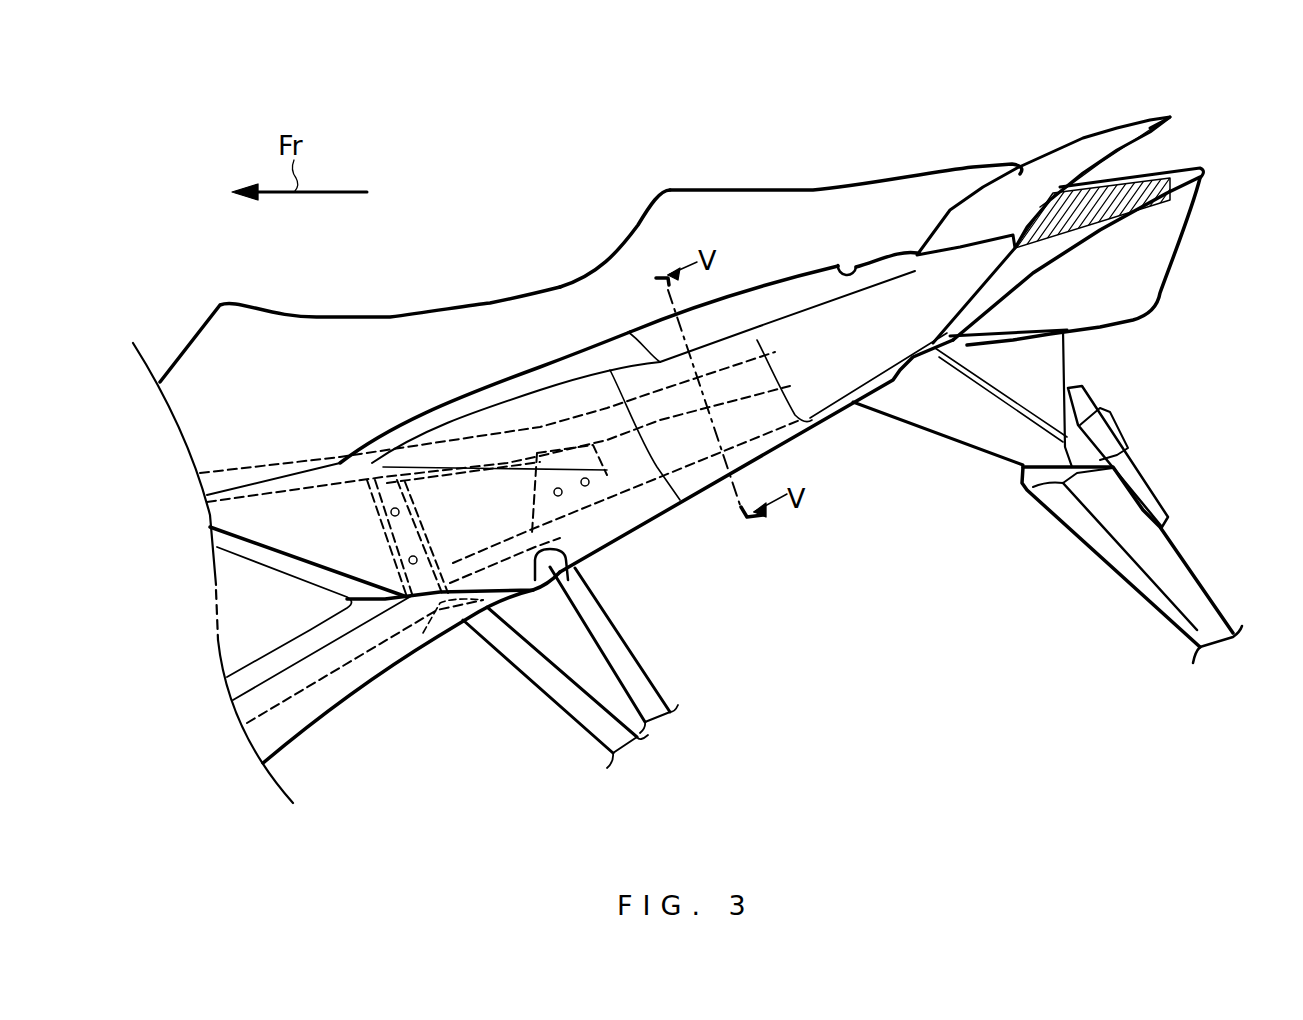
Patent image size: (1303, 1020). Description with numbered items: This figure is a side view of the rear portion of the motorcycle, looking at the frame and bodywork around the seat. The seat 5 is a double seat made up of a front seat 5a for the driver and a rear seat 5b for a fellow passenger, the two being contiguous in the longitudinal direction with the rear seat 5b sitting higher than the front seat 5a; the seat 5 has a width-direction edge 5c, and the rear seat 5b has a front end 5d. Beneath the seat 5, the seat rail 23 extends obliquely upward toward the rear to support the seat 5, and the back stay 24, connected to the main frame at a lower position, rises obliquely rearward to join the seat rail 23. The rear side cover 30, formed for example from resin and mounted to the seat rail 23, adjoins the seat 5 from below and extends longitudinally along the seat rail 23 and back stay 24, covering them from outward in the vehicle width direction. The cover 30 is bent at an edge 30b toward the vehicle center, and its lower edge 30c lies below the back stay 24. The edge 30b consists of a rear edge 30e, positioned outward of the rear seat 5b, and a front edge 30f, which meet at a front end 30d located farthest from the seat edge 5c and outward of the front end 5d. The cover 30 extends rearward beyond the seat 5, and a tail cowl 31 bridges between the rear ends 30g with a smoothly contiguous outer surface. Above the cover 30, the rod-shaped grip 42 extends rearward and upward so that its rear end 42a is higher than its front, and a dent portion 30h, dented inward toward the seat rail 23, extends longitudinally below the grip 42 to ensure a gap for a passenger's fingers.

The seat 5 is at (810, 77).
The front seat 5a is at (488, 313).
The rear seat 5b is at (813, 187).
The edge of the seat 5c is at (856, 267).
The front end of the rear seat 5d is at (667, 192).
The seat rail 23 is at (290, 458).
The back stay 24 is at (370, 657).
The rear side cover 30 is at (468, 400).
The edge of the rear side cover 30b is at (853, 595).
The lower edge of the rear side cover 30c is at (607, 553).
The front end of the rear edge 30d is at (633, 338).
The rear edge 30e is at (823, 300).
The front edge 30f is at (653, 373).
The rear end of the rear side cover 30g is at (1160, 200).
The dent portion 30h is at (1092, 223).
The tail cowl 31 is at (1210, 175).
The grip 42 is at (1093, 150).
The rear end of the grip 42a is at (1177, 118).